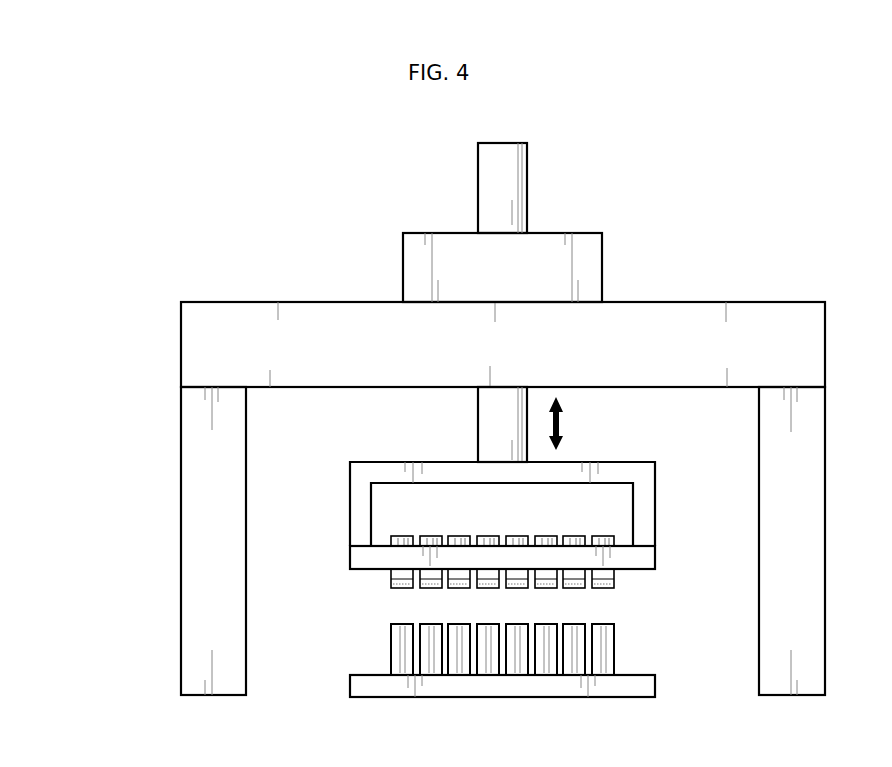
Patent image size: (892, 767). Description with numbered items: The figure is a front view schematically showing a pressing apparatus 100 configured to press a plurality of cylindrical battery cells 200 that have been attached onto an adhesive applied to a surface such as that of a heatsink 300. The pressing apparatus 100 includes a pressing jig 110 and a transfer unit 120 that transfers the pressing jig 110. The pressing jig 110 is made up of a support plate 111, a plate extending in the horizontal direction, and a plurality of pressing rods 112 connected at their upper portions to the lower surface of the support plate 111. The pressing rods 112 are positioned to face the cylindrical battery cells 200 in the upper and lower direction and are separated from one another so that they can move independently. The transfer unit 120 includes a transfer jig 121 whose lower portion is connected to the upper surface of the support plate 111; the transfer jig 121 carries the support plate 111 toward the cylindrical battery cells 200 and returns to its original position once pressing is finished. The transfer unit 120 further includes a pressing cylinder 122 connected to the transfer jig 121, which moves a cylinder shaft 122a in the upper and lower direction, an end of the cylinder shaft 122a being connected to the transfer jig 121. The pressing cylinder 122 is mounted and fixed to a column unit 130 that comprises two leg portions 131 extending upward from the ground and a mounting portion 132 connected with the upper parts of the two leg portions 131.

The pressing apparatus 100 is at (272, 146).
The pressing jig 110 is at (688, 588).
The support plate 111 is at (630, 568).
The pressing rods 112 is at (612, 597).
The transfer unit 120 is at (700, 185).
The transfer jig 121 is at (628, 467).
The pressing cylinder 122 is at (575, 203).
The cylinder shaft 122a is at (478, 414).
The column unit 130 is at (105, 340).
The leg portions 131 is at (189, 423).
The mounting portion 132 is at (189, 345).
The cylindrical battery cells 200 is at (392, 647).
The heatsink 300 is at (356, 684).